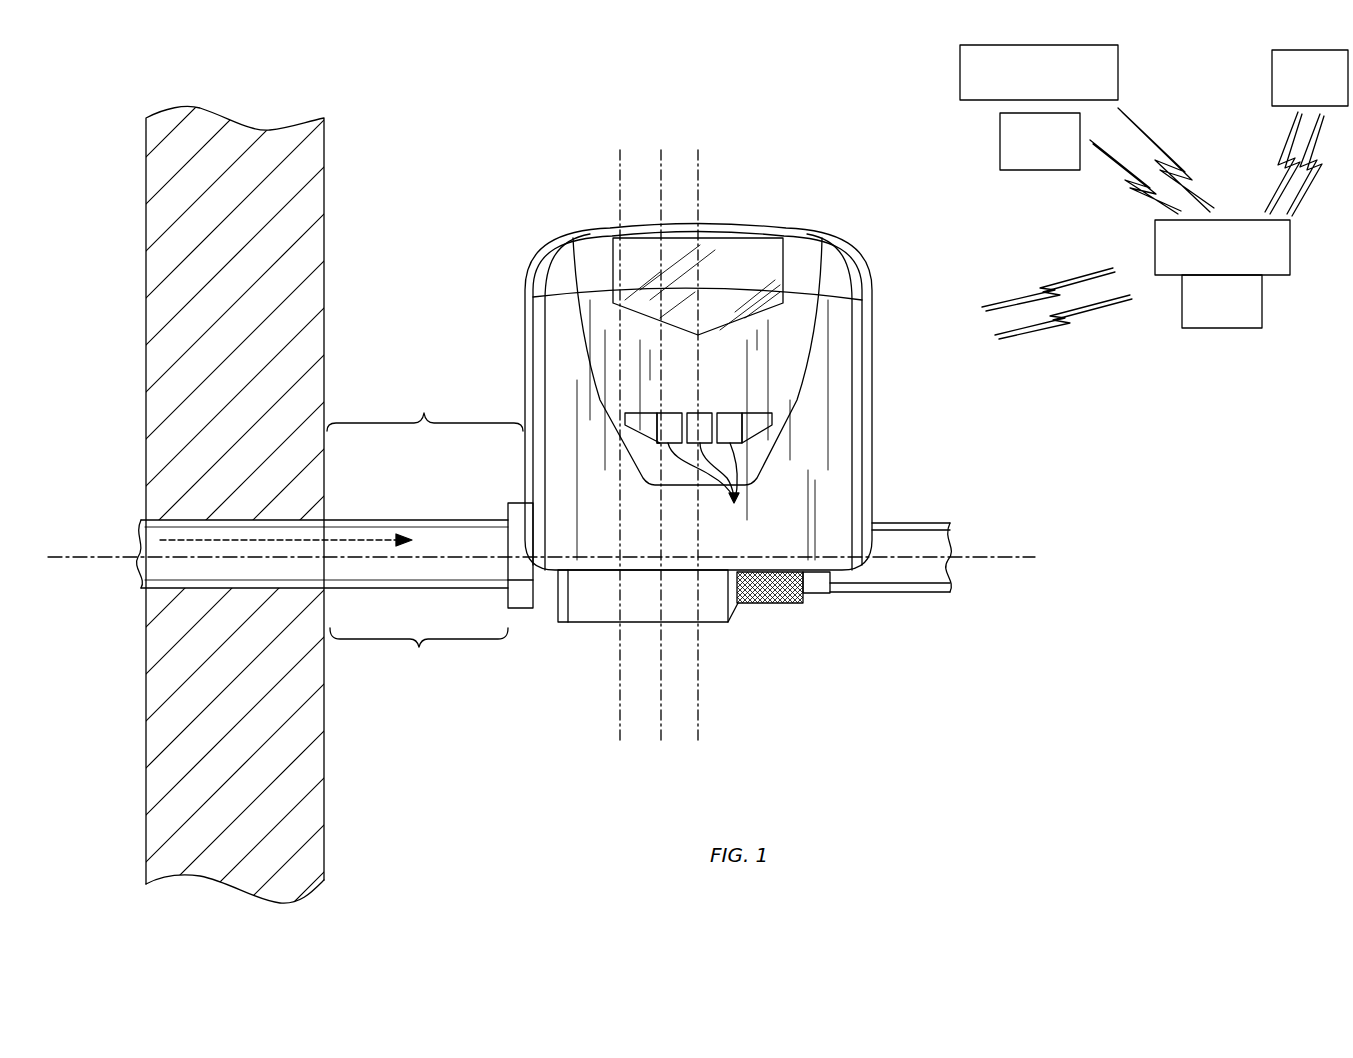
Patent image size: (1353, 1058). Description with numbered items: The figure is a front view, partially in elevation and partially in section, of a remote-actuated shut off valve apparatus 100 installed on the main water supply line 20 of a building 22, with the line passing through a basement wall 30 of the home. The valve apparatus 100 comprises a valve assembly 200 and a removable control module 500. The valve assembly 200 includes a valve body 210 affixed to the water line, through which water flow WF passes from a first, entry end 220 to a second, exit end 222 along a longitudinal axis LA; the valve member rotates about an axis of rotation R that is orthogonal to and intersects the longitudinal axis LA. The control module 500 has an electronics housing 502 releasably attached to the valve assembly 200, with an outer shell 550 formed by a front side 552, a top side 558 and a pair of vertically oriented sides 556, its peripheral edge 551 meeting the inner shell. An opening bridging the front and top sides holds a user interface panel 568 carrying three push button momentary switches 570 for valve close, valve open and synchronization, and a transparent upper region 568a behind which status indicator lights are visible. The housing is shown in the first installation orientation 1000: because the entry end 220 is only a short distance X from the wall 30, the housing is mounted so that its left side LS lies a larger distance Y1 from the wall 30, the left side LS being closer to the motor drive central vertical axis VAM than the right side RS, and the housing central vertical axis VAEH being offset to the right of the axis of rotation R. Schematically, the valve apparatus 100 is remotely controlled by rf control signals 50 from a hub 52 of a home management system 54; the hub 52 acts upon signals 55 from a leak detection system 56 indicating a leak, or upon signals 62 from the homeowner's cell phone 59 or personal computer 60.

The building 22 is at (342, 101).
The basement wall 30 is at (312, 240).
The water supply line 20 is at (130, 544).
The water flow WF is at (350, 538).
The longitudinal axis LA is at (1012, 563).
The distance X is at (419, 654).
The distance Y1 is at (425, 407).
The entry end 220 is at (508, 600).
The valve assembly 200 is at (721, 638).
The valve body 210 is at (630, 624).
The exit end 222 is at (812, 605).
The peripheral edge 551 is at (832, 600).
The control module 500 is at (718, 424).
The outer shell 550 is at (892, 465).
The front side 552 is at (770, 517).
The top side 558 is at (810, 232).
The vertically oriented sides 556 is at (525, 302).
The left side LS is at (525, 378).
The right side RS is at (872, 368).
The electronics housing 502 is at (889, 350).
The user interface panel 568 is at (795, 330).
The upper region 568a is at (738, 232).
The push button momentary switches 570 is at (698, 471).
The central vertical axis of the motor drive VAM is at (619, 182).
The axis of rotation R is at (662, 160).
The central vertical axis of the electronics housing VAEH is at (700, 168).
The first installation orientation 1000 is at (500, 195).
The valve apparatus 100 is at (1109, 205).
The cell phone 59 is at (960, 73).
The personal computer 60 is at (1000, 141).
The leak detection system 56 is at (1272, 78).
The home management system 54 is at (1290, 250).
The hub 52 is at (1262, 302).
The signals 62 is at (1195, 185).
The signals 55 is at (1304, 182).
The rf control signals 50 is at (1097, 305).